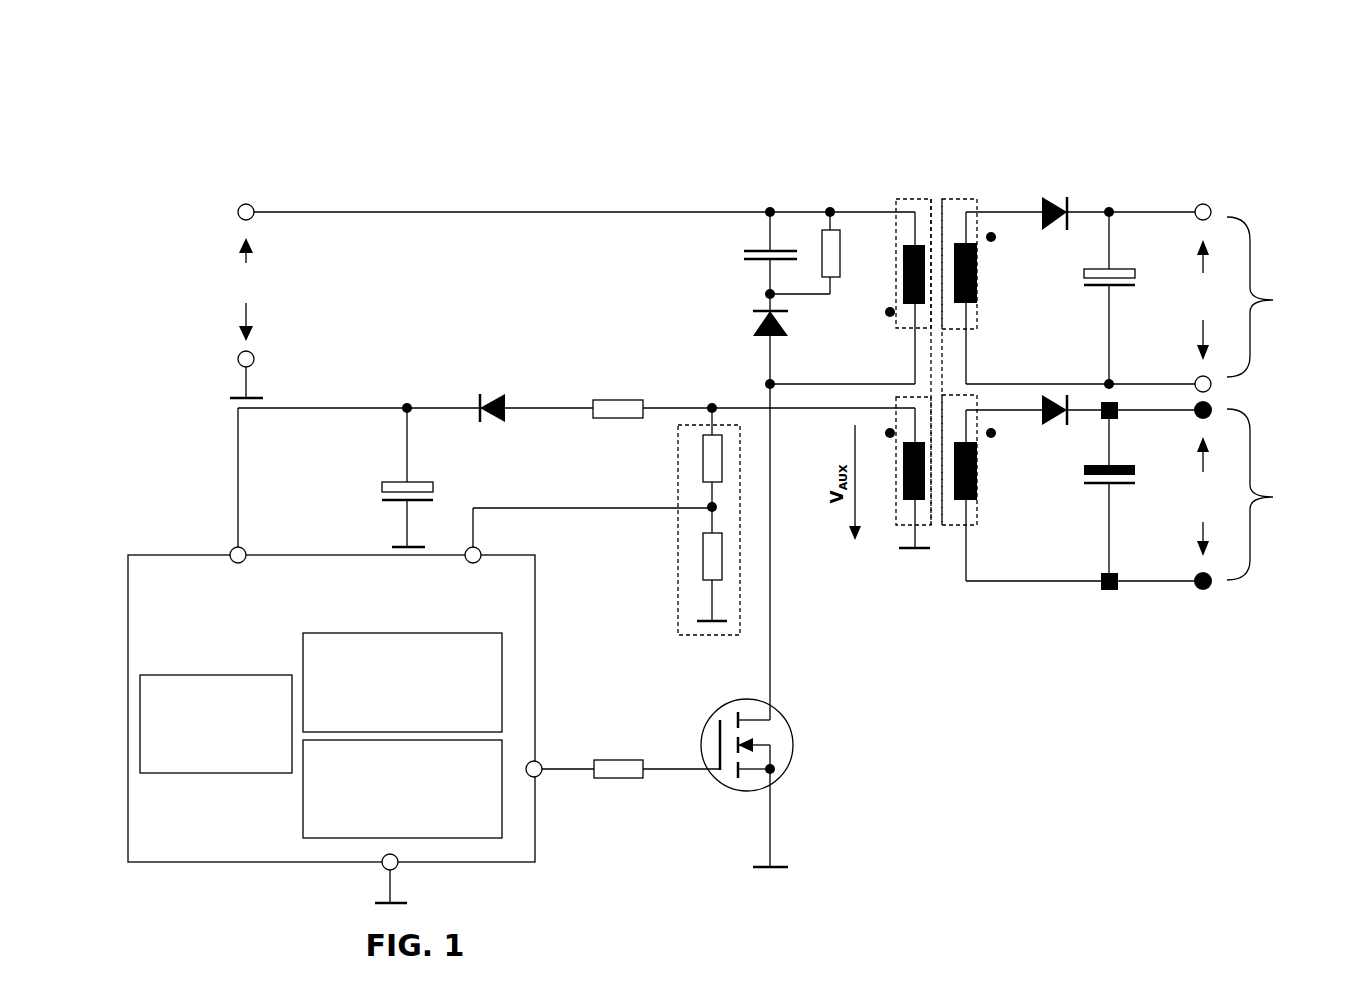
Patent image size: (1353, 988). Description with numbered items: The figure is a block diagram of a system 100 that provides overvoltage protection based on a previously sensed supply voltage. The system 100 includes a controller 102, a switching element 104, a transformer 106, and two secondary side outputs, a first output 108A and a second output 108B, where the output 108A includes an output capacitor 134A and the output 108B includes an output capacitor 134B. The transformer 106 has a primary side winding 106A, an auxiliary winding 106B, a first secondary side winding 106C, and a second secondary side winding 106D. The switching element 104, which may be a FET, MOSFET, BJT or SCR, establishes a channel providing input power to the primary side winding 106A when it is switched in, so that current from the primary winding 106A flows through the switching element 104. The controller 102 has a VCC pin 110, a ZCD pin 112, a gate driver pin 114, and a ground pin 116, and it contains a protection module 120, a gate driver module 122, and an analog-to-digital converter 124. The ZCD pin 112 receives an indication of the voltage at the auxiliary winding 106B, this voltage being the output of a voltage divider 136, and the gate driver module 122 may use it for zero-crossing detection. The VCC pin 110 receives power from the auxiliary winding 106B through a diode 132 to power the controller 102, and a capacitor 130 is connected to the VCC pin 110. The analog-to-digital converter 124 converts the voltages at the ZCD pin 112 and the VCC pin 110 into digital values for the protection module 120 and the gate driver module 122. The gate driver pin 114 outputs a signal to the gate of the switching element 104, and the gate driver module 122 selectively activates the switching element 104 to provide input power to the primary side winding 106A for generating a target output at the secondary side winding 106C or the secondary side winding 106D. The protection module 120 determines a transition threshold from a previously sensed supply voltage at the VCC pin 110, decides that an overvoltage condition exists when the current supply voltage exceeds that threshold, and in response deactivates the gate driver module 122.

The system 100 is at (120, 104).
The controller 102 is at (331, 708).
The switching element 104 is at (700, 744).
The transformer 106 is at (936, 188).
The primary side winding 106A is at (894, 203).
The auxiliary winding 106B is at (894, 405).
The secondary side winding 106C is at (979, 281).
The secondary side winding 106D is at (981, 476).
The output 108A is at (1152, 294).
The output 108B is at (1152, 492).
The VCC pin 110 is at (228, 552).
The ZCD pin 112 is at (472, 552).
The gate driver pin 114 is at (545, 776).
The ground pin 116 is at (380, 876).
The protection module 120 is at (402, 682).
The gate driver module 122 is at (402, 789).
The analog-to-digital converter 124 is at (216, 724).
The capacitor 130 is at (421, 486).
The diode 132 is at (482, 397).
The output capacitor 134A is at (1131, 272).
The output capacitor 134B is at (1138, 464).
The voltage divider 136 is at (680, 577).